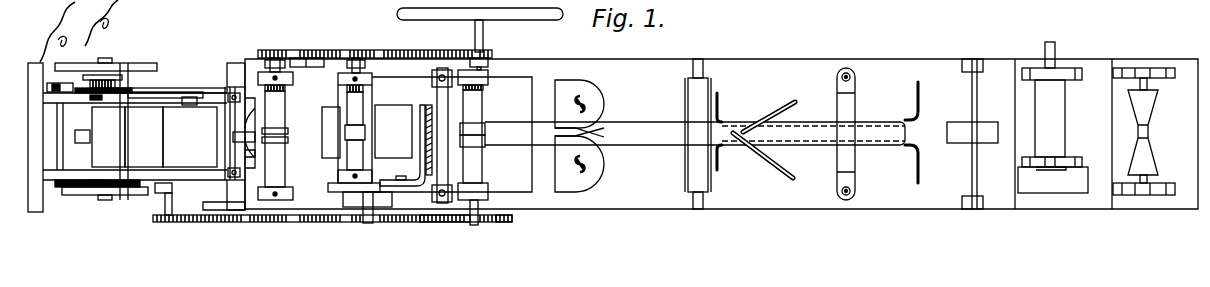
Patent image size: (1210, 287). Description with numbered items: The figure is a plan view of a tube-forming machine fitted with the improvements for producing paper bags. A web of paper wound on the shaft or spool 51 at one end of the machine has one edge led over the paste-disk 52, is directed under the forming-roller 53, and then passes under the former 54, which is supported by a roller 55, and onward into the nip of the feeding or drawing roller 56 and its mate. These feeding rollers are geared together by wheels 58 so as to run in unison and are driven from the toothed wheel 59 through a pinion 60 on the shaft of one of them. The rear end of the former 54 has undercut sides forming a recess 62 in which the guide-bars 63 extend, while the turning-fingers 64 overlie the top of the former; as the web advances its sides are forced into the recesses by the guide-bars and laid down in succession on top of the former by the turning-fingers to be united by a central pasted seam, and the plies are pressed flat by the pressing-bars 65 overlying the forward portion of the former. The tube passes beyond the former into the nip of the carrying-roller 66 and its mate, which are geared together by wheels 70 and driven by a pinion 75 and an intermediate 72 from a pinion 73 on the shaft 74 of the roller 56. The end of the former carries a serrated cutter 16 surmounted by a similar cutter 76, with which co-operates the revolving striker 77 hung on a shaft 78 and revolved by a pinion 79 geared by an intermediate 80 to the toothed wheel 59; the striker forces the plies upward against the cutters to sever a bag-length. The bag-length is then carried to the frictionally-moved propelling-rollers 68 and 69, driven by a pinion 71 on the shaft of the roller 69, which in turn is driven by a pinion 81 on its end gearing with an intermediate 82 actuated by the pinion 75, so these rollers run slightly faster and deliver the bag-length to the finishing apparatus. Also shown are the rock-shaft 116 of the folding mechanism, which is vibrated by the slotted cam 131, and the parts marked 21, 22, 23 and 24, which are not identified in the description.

The serrated cutter 16 is at (423, 105).
The lower plate 21 is at (122, 195).
The bracket 22 is at (240, 133).
The frame box 23 is at (171, 132).
The lower rack 24 is at (318, 222).
The shaft or spool 51 is at (1144, 131).
The paste-disk 52 is at (1049, 172).
The forming-roller 53 is at (972, 134).
The former 54 is at (695, 133).
The roller 55 is at (703, 134).
The feeding or drawing roller 56 is at (473, 145).
The wheels 58 is at (487, 88).
The toothed wheel 59 is at (500, 222).
The pinion 60 is at (468, 222).
The -shaped recess 62 is at (846, 134).
The guide-bars 63 is at (910, 120).
The turning-fingers 64 is at (775, 112).
The pressing-bars 65 is at (553, 142).
The carrying-roller 66 is at (355, 154).
The propelling-roller 68 is at (275, 145).
The propelling-roller 69 is at (253, 157).
The wheels 70 is at (355, 128).
The pinion 71 is at (293, 89).
The intermediate 72 is at (405, 50).
The pinion 73 is at (484, 53).
The shaft 74 is at (483, 66).
The pinion 75 is at (356, 50).
The serrated cutter 76 is at (437, 185).
The revolving striker 77 is at (420, 170).
The shaft 78 is at (360, 195).
The pinion 79 is at (366, 222).
The intermediate 80 is at (440, 222).
The pinion 81 is at (275, 50).
The intermediate 82 is at (318, 50).
The rock-shaft 116 is at (122, 142).
The slotted cam 131 is at (128, 63).